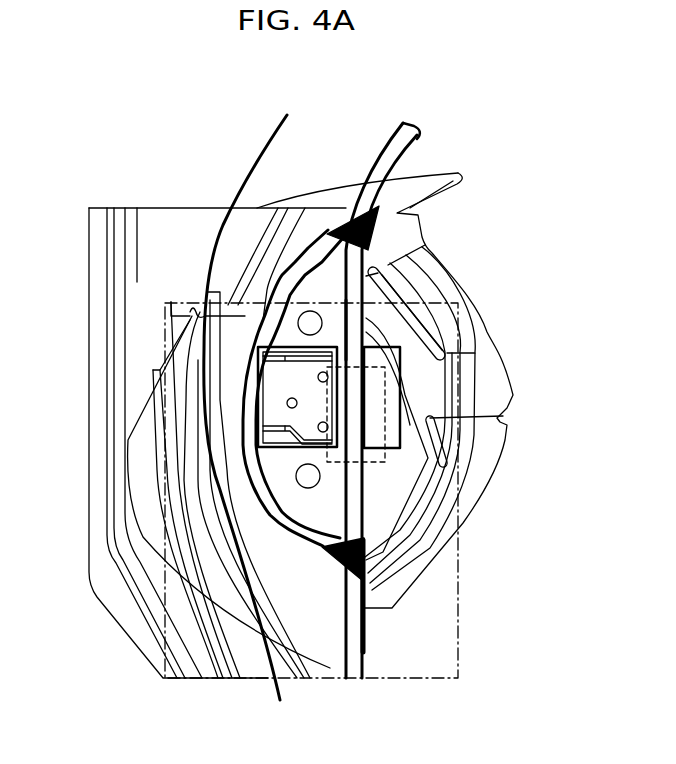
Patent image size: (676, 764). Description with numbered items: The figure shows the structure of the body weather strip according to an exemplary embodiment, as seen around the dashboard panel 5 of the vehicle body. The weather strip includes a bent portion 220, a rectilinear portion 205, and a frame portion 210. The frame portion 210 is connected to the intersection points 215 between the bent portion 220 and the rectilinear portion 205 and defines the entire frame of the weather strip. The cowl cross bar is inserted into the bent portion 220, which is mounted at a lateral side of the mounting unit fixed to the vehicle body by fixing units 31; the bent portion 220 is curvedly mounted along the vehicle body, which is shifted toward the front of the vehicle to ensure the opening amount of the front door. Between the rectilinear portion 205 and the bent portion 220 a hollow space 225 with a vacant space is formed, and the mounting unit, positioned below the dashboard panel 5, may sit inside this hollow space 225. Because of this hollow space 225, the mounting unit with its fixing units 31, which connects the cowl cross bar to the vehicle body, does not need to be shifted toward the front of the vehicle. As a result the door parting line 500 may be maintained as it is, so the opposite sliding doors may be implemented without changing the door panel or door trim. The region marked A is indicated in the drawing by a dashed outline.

The dashboard panel 5 is at (488, 460).
The fixing units 31 is at (308, 476).
The rectilinear portion 205 is at (353, 422).
The frame portion 210 is at (413, 140).
The intersection points 215 is at (356, 228).
The bent portion 220 is at (192, 302).
The hollow space 225 is at (352, 333).
The door parting line 500 is at (268, 143).
The section A is at (386, 382).